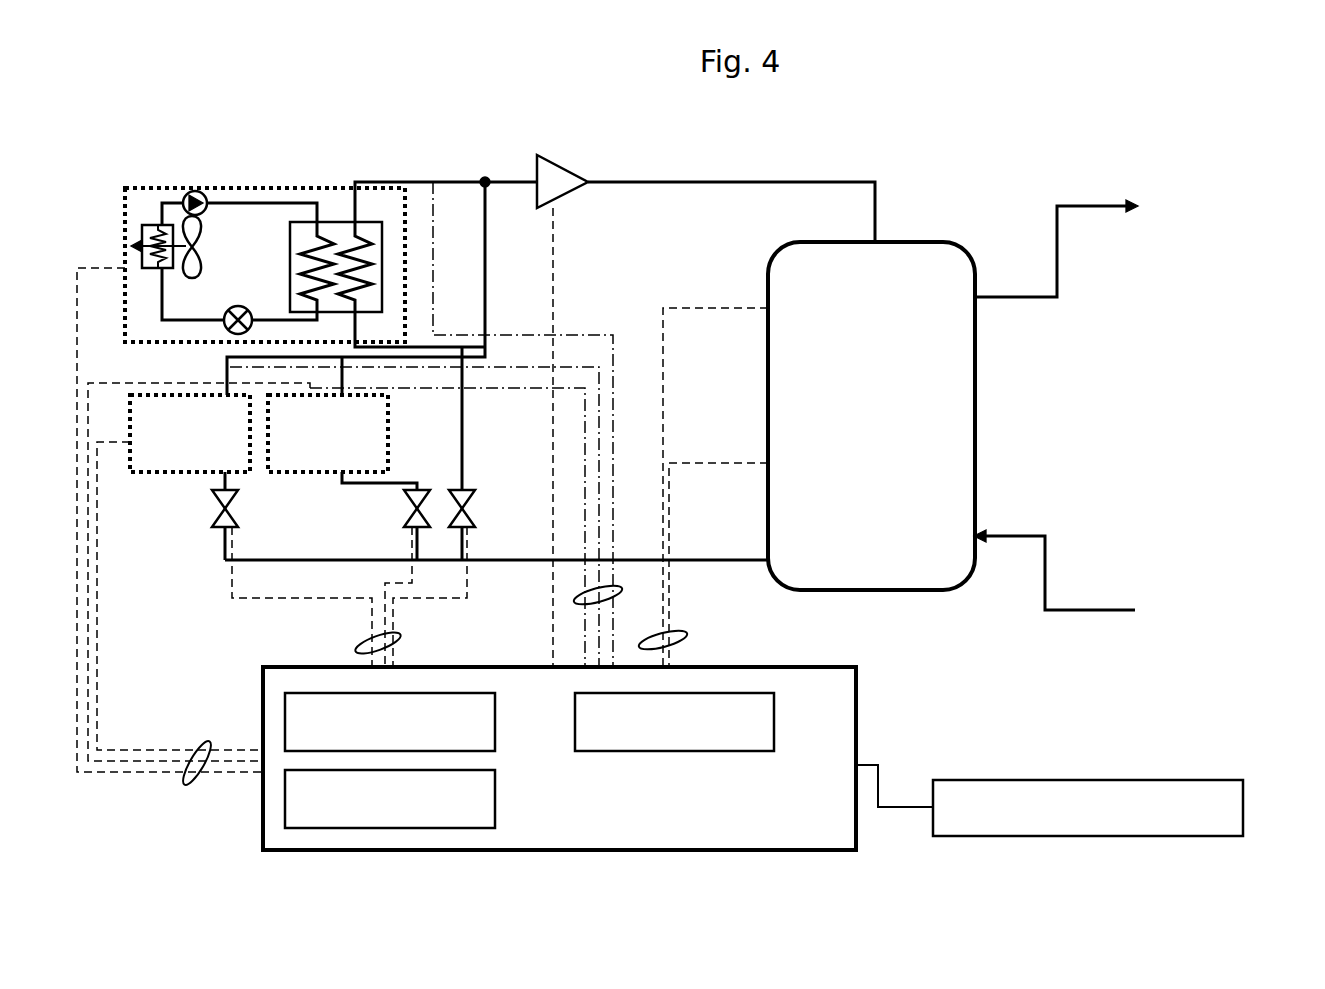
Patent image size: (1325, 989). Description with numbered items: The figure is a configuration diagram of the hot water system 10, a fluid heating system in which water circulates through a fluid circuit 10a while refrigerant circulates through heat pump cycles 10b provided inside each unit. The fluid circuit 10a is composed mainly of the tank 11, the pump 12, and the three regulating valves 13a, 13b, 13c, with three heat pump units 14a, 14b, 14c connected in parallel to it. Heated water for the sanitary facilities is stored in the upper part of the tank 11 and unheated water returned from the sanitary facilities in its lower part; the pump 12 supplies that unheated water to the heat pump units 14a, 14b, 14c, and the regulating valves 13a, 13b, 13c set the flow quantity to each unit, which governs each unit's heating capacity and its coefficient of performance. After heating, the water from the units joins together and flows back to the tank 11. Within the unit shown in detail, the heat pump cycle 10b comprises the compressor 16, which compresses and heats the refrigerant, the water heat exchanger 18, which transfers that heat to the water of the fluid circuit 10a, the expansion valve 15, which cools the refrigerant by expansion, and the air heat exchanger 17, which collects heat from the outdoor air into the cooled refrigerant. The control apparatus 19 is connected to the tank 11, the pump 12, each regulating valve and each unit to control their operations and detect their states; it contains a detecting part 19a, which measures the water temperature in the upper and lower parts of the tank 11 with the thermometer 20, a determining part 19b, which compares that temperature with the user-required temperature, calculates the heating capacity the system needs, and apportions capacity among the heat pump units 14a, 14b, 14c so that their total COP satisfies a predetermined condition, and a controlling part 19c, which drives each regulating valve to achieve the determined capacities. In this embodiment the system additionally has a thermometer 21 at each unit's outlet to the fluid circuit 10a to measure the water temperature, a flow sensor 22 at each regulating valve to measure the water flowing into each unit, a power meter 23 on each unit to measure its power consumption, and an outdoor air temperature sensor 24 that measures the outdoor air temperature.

The hot water system 10 is at (1012, 172).
The fluid circuit 10a is at (772, 182).
The heat pump cycle 10b is at (238, 203).
The tank 11 is at (920, 243).
The pump 12 is at (571, 167).
The regulating valve 13a is at (472, 490).
The regulating valve 13b is at (408, 511).
The regulating valve 13c is at (218, 520).
The heat pump unit 14a is at (297, 188).
The heat pump unit 14b is at (310, 473).
The heat pump unit 14c is at (180, 473).
The expansion valve 15 is at (240, 306).
The compressor 16 is at (200, 190).
The air heat exchanger 17 is at (148, 225).
The water heat exchanger 18 is at (373, 222).
The control apparatus 19 is at (598, 758).
The detecting part 19a is at (774, 729).
The determining part 19b is at (495, 730).
The controlling part 19c is at (495, 806).
The thermometer 20 is at (682, 634).
The thermometer 21 is at (616, 590).
The flow sensor 22 is at (396, 638).
The power meter 23 is at (210, 742).
The outdoor air temperature sensor 24 is at (1090, 780).